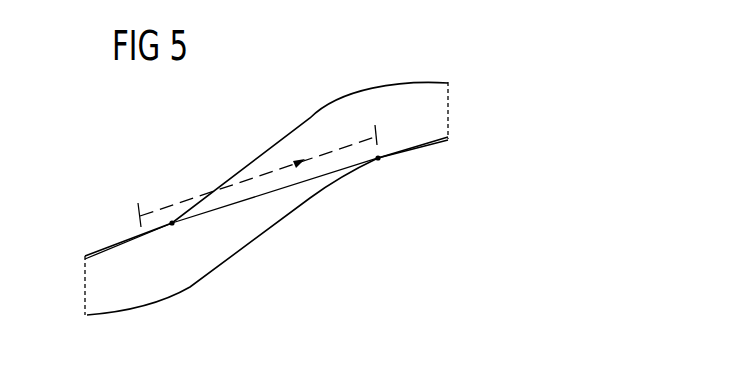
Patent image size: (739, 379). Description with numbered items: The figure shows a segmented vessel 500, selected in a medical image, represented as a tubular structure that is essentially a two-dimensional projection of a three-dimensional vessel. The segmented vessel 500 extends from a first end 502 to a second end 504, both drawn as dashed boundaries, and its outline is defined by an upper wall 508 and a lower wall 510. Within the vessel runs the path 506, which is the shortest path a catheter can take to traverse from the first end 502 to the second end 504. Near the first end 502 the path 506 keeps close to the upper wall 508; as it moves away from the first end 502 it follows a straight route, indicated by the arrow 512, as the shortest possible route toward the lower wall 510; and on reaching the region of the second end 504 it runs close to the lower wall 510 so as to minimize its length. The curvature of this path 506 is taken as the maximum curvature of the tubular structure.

The segmented vessel 500 is at (228, 119).
The first end 502 is at (84, 295).
The second end 504 is at (449, 103).
The path 506 is at (230, 208).
The upper wall 508 is at (374, 86).
The lower wall 510 is at (326, 187).
The arrow 512 is at (280, 169).